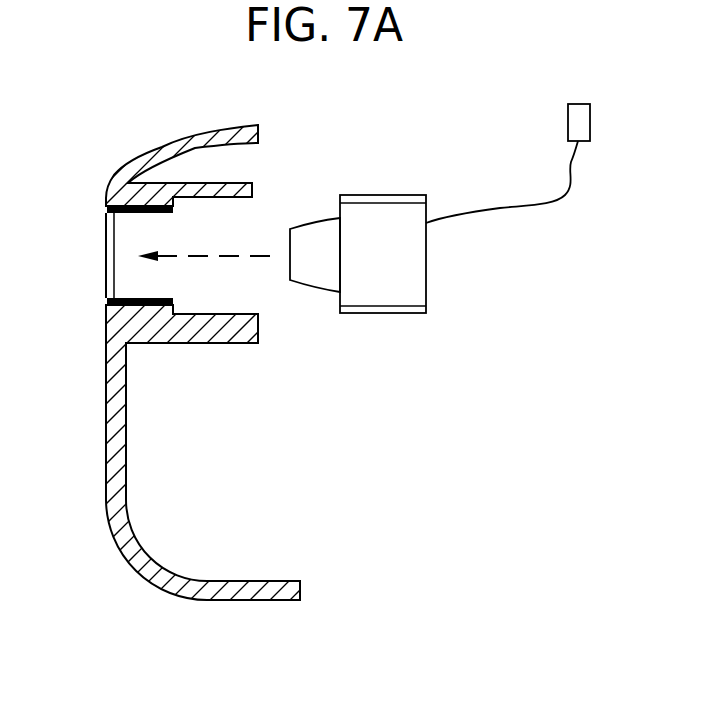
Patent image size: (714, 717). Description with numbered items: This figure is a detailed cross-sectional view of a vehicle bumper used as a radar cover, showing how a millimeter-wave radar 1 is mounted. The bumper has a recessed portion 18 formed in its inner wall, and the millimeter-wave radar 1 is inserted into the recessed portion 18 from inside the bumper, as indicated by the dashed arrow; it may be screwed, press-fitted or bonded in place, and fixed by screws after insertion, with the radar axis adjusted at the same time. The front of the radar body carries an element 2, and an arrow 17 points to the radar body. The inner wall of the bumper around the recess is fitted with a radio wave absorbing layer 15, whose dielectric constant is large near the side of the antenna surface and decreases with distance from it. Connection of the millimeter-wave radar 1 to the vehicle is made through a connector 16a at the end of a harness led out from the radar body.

The millimeter-wave radar 1 is at (408, 279).
The lens 2 is at (316, 236).
The radio wave absorbing layer 15 is at (130, 204).
The connector 16a is at (568, 118).
The mounting surface 17 is at (392, 332).
The recessed portion 18 is at (202, 300).